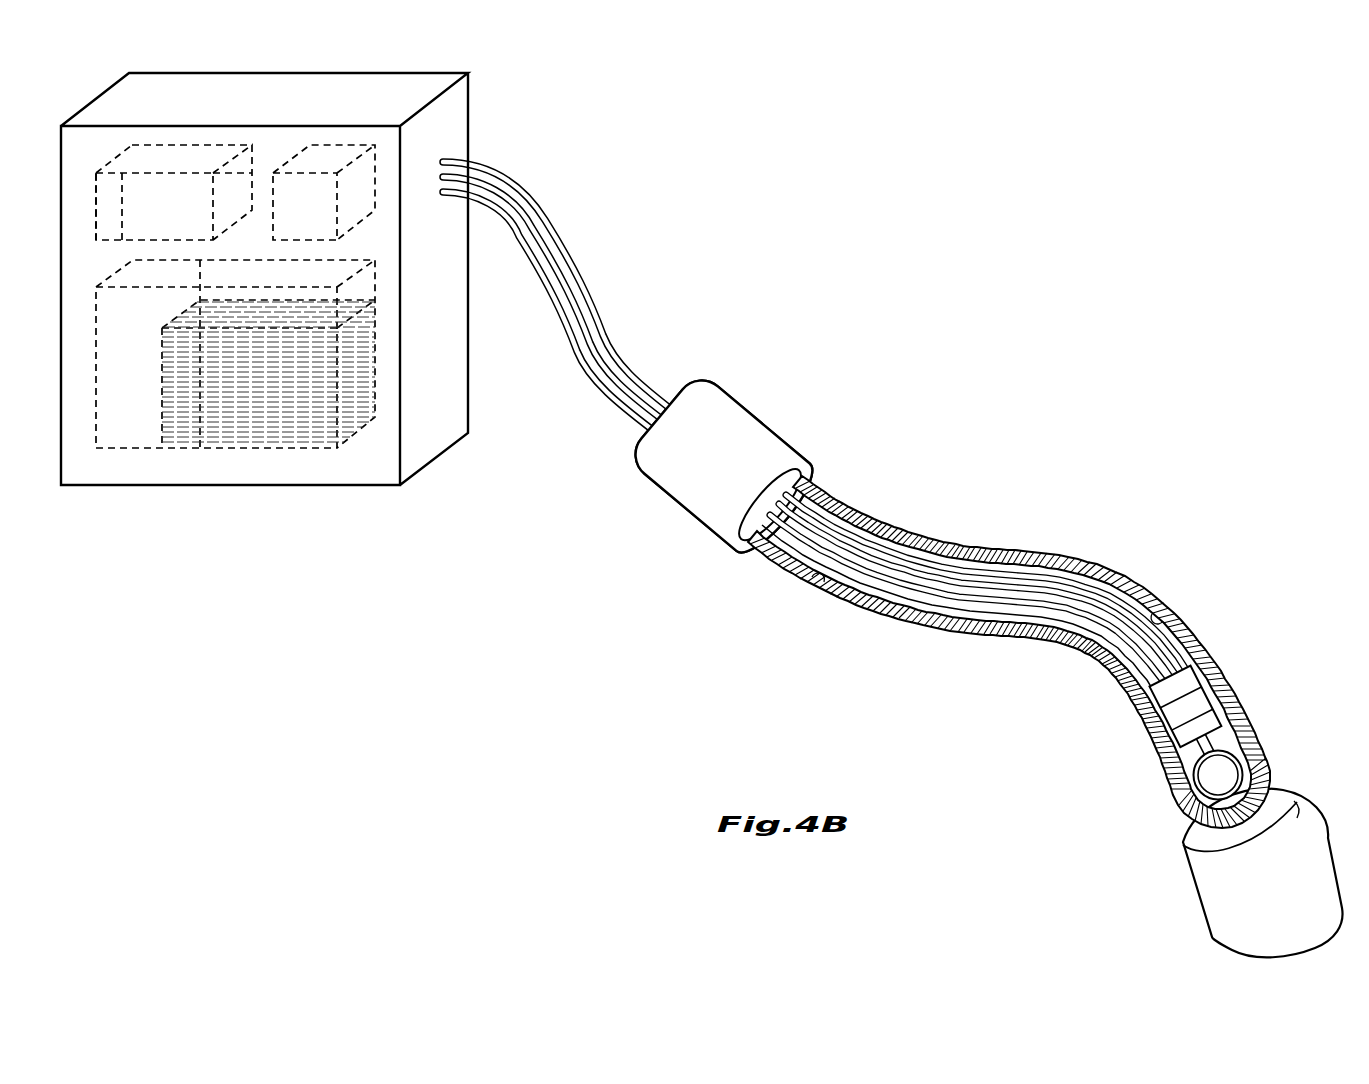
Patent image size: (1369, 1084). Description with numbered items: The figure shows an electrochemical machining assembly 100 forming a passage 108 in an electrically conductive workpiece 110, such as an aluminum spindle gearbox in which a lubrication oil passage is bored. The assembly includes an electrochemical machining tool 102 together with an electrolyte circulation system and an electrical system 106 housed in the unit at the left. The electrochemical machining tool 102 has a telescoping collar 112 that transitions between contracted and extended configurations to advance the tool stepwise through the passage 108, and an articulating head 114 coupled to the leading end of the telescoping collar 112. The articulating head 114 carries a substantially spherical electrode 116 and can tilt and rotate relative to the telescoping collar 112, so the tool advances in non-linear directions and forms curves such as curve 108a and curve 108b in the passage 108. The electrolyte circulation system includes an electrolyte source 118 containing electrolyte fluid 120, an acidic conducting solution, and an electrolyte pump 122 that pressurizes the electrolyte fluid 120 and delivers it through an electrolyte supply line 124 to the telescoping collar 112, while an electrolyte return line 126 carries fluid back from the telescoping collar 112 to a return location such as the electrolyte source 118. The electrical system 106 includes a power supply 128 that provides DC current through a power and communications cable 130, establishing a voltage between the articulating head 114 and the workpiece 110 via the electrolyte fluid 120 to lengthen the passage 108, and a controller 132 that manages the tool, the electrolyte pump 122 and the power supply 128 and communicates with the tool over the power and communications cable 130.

The electrochemical machining assembly 100 is at (461, 122).
The electrochemical machining tool 102 is at (1193, 681).
The electrical system 106 is at (180, 147).
The passage 108 is at (1065, 574).
The curve 108a is at (815, 583).
The curve 108b is at (1165, 622).
The electrically conductive workpiece 110 is at (1009, 630).
The telescoping collar 112 is at (1208, 722).
The articulating head 114 is at (1234, 774).
The substantially spherical electrode 116 is at (1203, 781).
The electrolyte source 118 is at (205, 450).
The electrolyte fluid 120 is at (291, 436).
The electrolyte pump 122 is at (325, 147).
The electrolyte supply line 124 is at (554, 234).
The electrolyte return line 126 is at (564, 281).
The power supply 128 is at (228, 147).
The power and communications cable 130 is at (572, 327).
The controller 132 is at (133, 147).